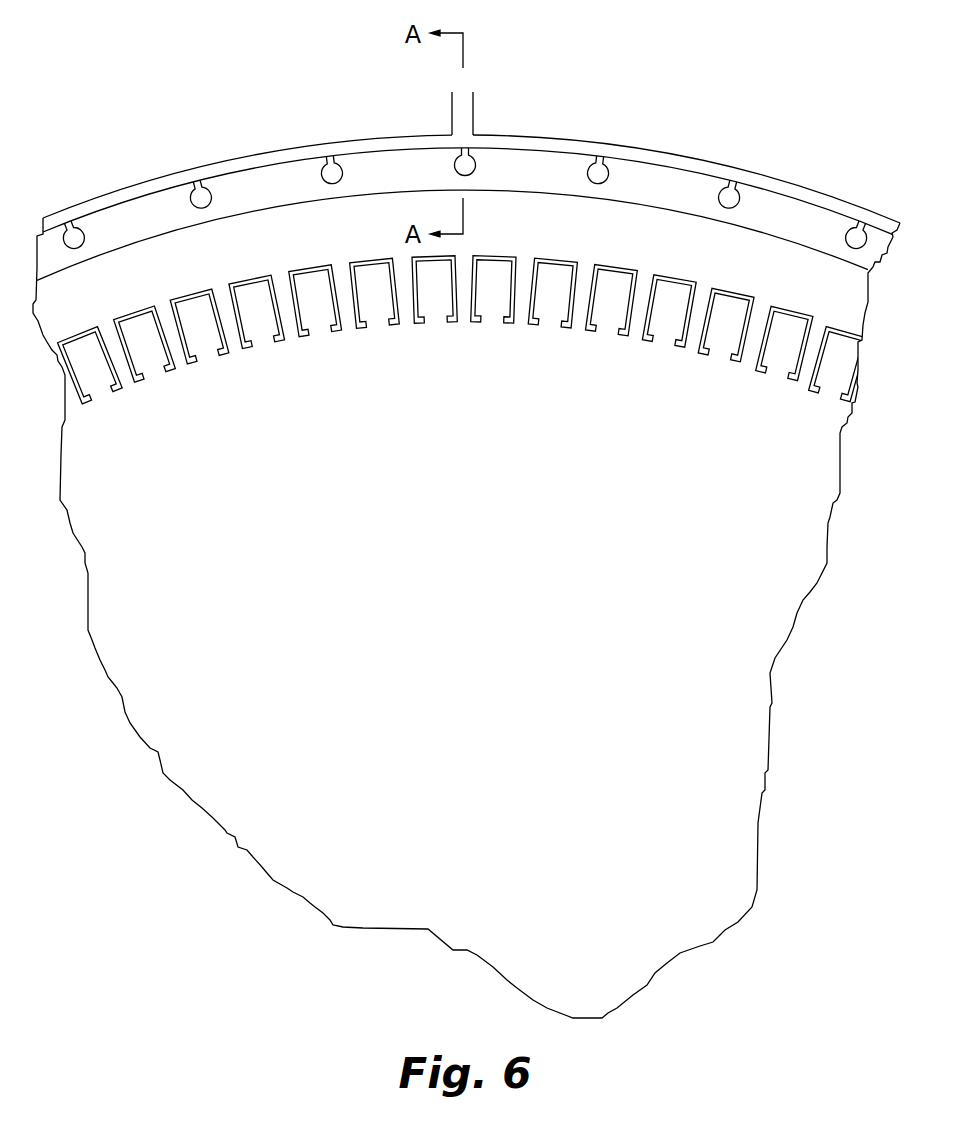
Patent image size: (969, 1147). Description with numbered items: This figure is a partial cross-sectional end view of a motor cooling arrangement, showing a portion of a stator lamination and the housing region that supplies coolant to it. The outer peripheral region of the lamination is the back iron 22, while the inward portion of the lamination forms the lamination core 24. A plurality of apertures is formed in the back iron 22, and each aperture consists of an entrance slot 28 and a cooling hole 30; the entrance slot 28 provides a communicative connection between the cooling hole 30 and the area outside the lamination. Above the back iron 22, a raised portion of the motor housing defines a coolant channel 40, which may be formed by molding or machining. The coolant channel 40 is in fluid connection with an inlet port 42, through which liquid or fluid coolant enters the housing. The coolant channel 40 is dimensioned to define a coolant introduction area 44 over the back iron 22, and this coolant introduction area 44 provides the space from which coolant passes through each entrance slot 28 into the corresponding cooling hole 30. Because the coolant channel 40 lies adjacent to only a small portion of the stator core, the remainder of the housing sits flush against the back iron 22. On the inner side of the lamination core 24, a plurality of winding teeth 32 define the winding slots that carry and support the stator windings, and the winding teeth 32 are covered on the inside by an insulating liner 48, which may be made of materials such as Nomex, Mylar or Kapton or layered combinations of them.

The back iron area 22 is at (666, 183).
The lamination core 24 is at (180, 247).
The entrance slot 28 is at (599, 160).
The cooling hole 30 is at (731, 200).
The winding teeth 32 is at (290, 317).
The coolant channel 40 is at (516, 132).
The inlet port 42 is at (453, 103).
The coolant introduction area 44 is at (257, 158).
The insulating liner 48 is at (420, 298).